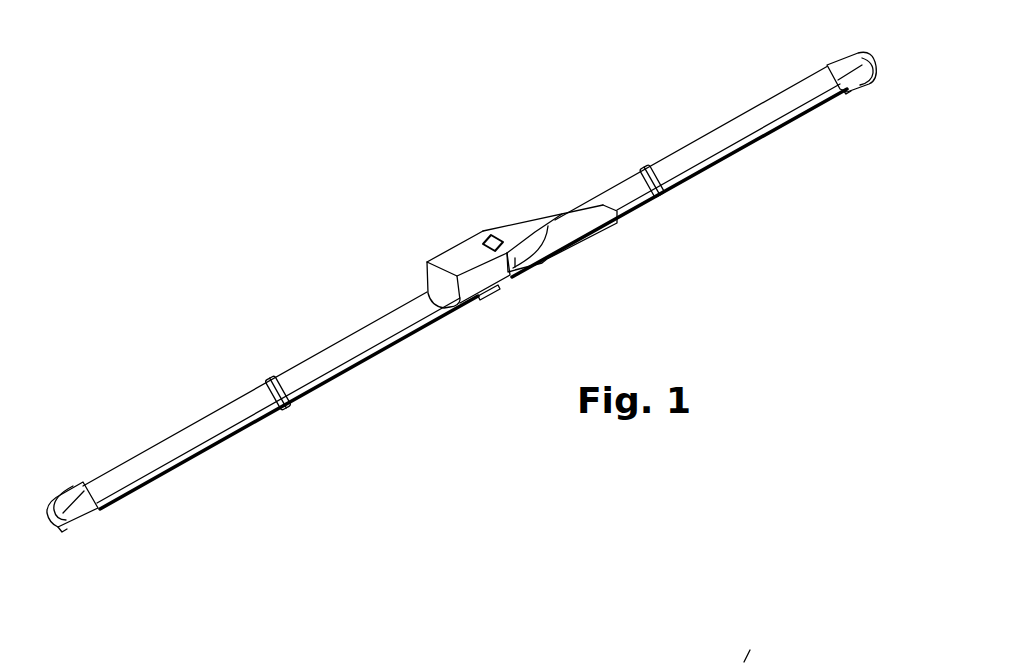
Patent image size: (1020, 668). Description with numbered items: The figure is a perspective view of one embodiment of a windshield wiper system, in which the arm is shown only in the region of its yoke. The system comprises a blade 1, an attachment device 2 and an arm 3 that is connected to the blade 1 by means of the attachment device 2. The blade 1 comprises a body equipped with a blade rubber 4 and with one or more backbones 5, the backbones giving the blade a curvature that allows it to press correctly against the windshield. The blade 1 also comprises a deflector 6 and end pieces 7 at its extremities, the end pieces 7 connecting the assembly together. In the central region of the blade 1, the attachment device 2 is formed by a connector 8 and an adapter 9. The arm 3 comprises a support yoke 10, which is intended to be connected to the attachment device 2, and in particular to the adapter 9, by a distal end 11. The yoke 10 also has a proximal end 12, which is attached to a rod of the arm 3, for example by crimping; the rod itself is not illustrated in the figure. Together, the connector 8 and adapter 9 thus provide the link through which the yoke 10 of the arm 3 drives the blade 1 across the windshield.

The blade 1 is at (465, 305).
The attachment device 2 is at (481, 232).
The arm 3 is at (604, 264).
The blade rubber 4 is at (62, 548).
The backbone 5 is at (350, 364).
The deflector 6 is at (358, 340).
The end piece 7 is at (845, 62).
The connector 8 is at (483, 304).
The adapter 9 is at (424, 280).
The support yoke 10 is at (516, 232).
The distal end 11 is at (435, 249).
The proximal end 12 is at (626, 226).